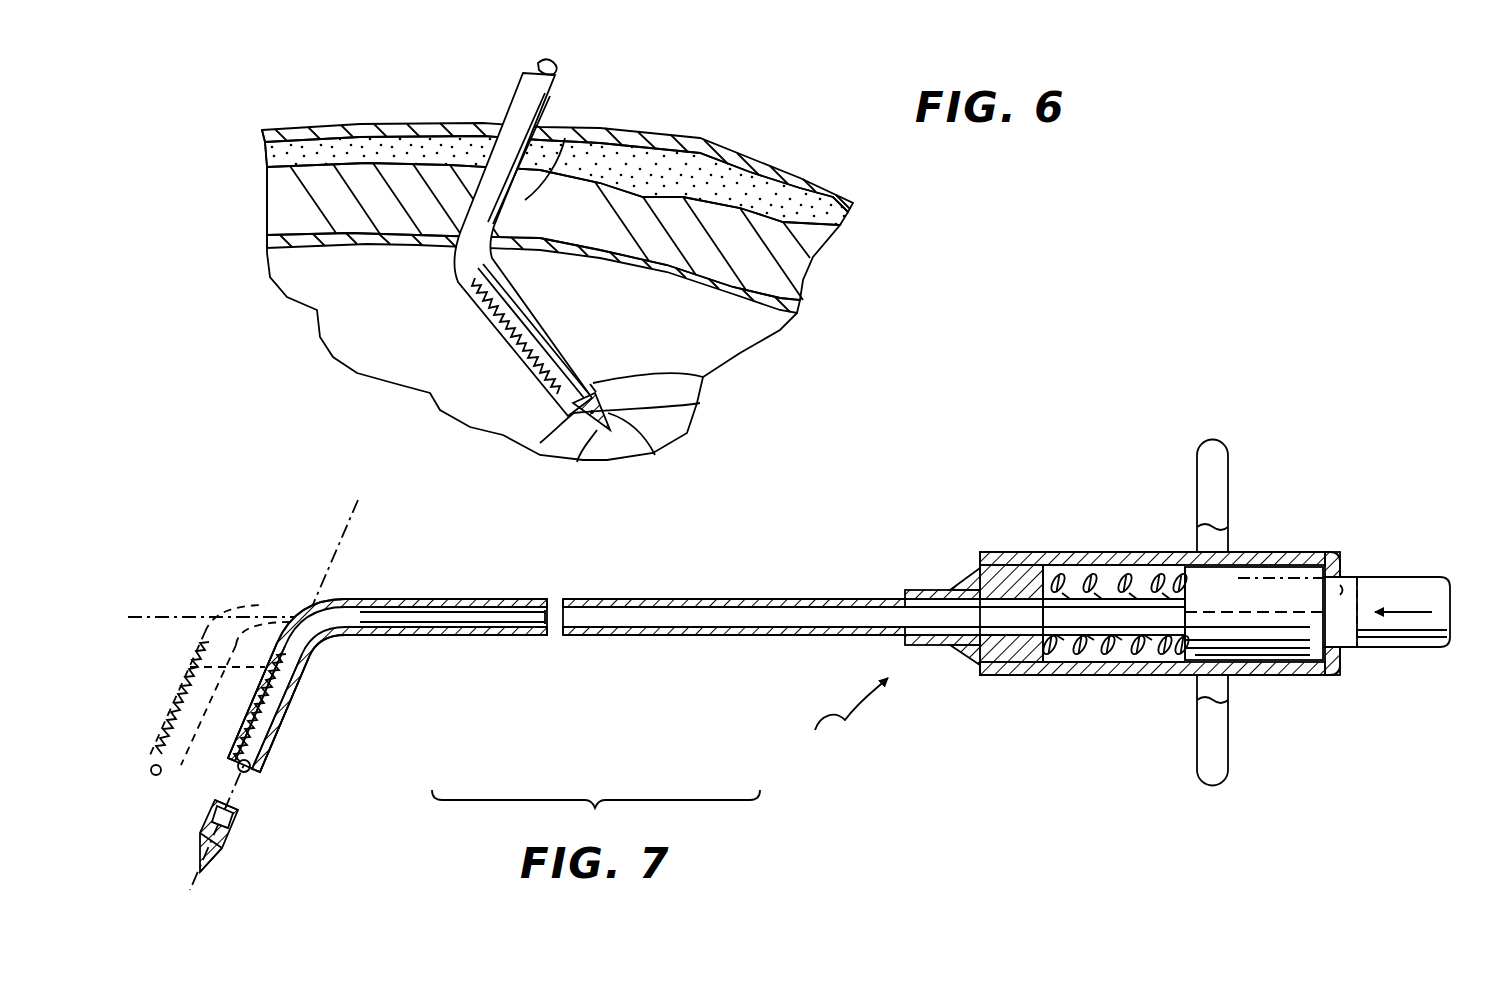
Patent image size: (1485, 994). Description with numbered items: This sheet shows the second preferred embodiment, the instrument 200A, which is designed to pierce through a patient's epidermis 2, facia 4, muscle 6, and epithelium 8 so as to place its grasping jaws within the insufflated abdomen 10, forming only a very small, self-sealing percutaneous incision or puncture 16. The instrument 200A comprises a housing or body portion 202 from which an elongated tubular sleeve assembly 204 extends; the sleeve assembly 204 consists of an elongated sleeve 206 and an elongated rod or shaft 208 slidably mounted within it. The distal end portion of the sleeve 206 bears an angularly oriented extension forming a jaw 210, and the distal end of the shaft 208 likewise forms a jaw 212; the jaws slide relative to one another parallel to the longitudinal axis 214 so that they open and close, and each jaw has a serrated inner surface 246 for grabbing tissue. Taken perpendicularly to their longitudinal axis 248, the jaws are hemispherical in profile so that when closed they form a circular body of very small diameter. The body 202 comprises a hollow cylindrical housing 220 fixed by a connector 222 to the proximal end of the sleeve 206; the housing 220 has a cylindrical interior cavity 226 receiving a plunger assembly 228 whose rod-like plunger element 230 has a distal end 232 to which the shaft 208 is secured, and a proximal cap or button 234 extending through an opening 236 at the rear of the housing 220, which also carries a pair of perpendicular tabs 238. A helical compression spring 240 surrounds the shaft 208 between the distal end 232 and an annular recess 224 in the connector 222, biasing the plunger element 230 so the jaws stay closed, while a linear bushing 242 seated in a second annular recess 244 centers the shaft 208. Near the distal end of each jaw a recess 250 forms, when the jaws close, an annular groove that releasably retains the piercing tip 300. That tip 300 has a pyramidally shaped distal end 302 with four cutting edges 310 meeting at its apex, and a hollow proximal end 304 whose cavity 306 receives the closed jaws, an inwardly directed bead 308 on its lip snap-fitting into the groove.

In FIG. 6, the epidermis 2 is at (745, 162).
In FIG. 6, the facia 4 is at (792, 195).
In FIG. 6, the muscle 6 is at (820, 215).
In FIG. 6, the epithelium 8 is at (804, 305).
In FIG. 6, the insufflated abdomen 10 is at (570, 308).
In FIG. 6, the percutaneous incision or puncture 16 is at (565, 140).
In FIG. 7, the instrument 200A is at (824, 721).
In FIG. 7, the housing or body portion 202 is at (1044, 548).
In FIG. 6, the sleeve assembly 204 is at (545, 93).
In FIG. 7, the sleeve assembly 204 is at (748, 596).
In FIG. 6, the sleeve 206 is at (512, 112).
In FIG. 7, the sleeve 206 is at (616, 600).
In FIG. 6, the rod or shaft 208 is at (536, 67).
In FIG. 7, the rod or shaft 208 is at (640, 618).
In FIG. 6, the jaw 210 is at (590, 382).
In FIG. 7, the jaw 210 is at (285, 712).
In FIG. 6, the jaw 212 is at (527, 358).
In FIG. 7, the jaw 212 is at (262, 696).
In FIG. 7, the longitudinal axis 214 is at (160, 617).
In FIG. 7, the hollow cylindrical housing 220 is at (1122, 678).
In FIG. 7, the connector 222 is at (957, 655).
In FIG. 7, the annular recess 224 is at (1027, 673).
In FIG. 7, the cylindrical interior cavity 226 is at (1075, 655).
In FIG. 7, the plunger assembly 228 is at (1223, 582).
In FIG. 7, the plunger element 230 is at (1198, 675).
In FIG. 7, the distal end 232 is at (1188, 578).
In FIG. 7, the cap or button 234 is at (1410, 588).
In FIG. 7, the opening 236 is at (1337, 583).
In FIG. 7, the tabs 238 is at (1215, 440).
In FIG. 7, the helical compression spring 240 is at (1090, 580).
In FIG. 7, the linear bushing 242 is at (983, 596).
In FIG. 7, the second annular recess 244 is at (1008, 575).
In FIG. 7, the serrated inner surface 246 is at (296, 676).
In FIG. 7, the longitudinal axis 248 is at (347, 580).
In FIG. 7, the recess 250 is at (160, 771).
In FIG. 6, the piercing tip 300 is at (705, 382).
In FIG. 7, the piercing tip 300 is at (238, 848).
In FIG. 6, the pyramidally shaped distal end 302 is at (655, 456).
In FIG. 7, the pyramidally shaped distal end 302 is at (218, 855).
In FIG. 6, the hollow proximal end 304 is at (530, 452).
In FIG. 7, the hollow proximal end 304 is at (212, 816).
In FIG. 7, the cavity 306 is at (232, 822).
In FIG. 7, the bead 308 is at (236, 808).
In FIG. 6, the cutting edges 310 is at (698, 408).
In FIG. 7, the cutting edges 310 is at (203, 860).